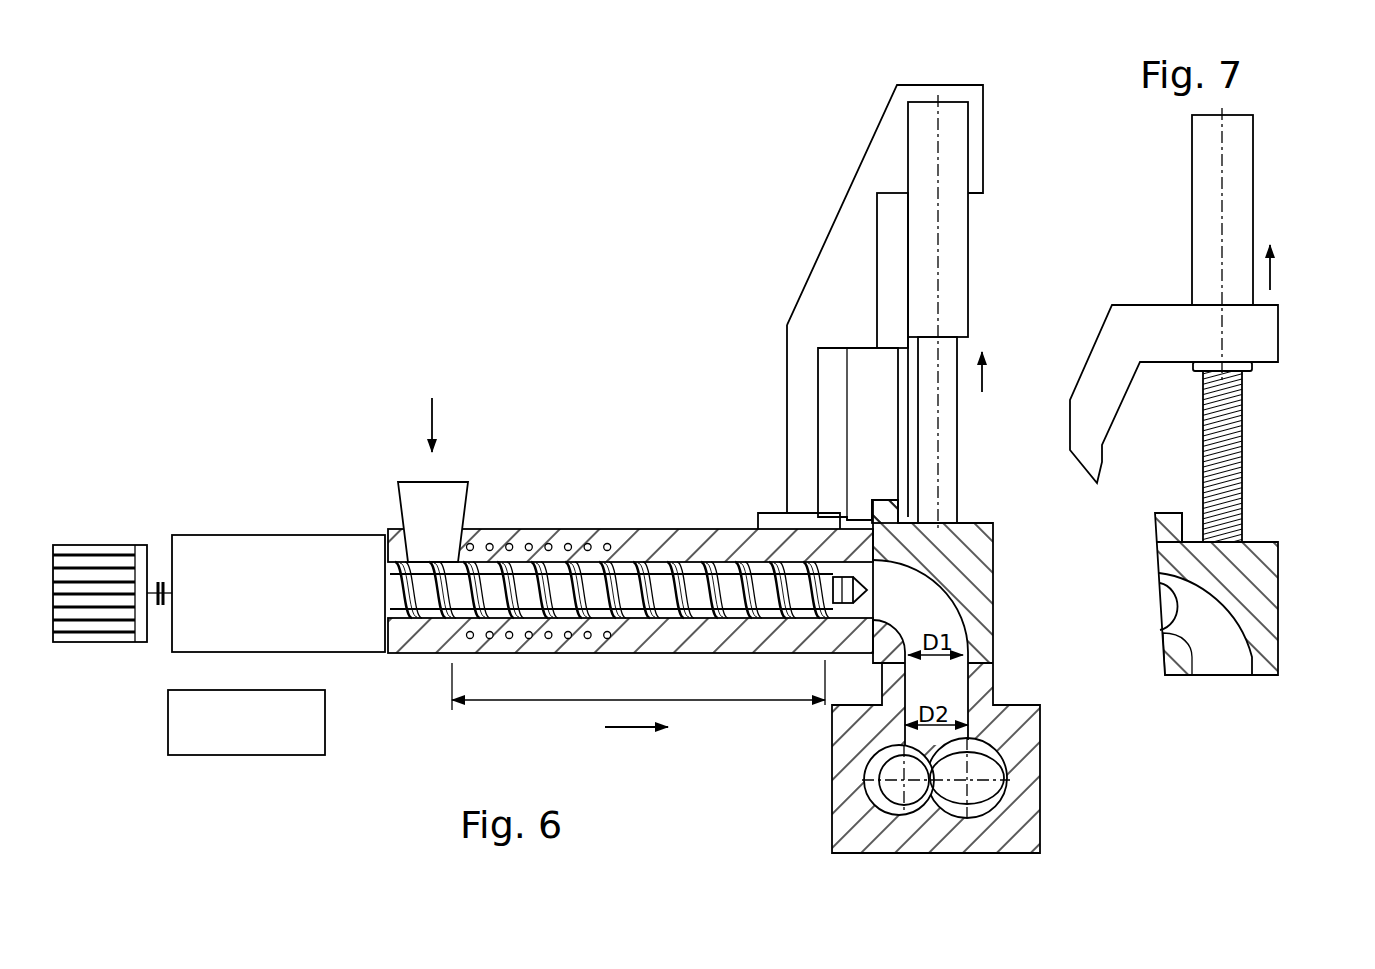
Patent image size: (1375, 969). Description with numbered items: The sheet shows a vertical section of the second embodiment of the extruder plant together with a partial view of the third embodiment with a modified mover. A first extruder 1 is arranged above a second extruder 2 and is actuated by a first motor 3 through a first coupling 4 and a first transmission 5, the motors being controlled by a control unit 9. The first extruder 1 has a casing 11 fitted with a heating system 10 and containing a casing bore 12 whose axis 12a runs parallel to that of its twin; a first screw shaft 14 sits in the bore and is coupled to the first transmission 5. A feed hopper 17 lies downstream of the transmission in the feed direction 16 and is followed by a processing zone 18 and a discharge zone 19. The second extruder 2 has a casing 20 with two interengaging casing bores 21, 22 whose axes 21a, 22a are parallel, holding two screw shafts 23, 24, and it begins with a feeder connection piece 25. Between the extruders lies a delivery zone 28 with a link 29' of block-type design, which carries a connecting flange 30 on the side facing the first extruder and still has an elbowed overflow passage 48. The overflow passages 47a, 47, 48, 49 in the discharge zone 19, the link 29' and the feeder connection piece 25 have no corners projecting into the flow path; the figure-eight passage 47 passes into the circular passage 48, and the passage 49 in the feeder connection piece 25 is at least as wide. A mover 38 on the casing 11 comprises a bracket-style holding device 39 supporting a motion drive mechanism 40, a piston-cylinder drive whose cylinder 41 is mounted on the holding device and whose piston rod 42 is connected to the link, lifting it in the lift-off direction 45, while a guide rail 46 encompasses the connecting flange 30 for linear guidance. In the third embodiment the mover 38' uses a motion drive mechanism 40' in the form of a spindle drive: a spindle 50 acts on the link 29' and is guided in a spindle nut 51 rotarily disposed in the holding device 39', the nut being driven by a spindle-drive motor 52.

In FIG. 6, the first extruder 1 is at (536, 527).
In FIG. 6, the second extruder 2 is at (1047, 722).
In FIG. 6, the first motor 3 is at (93, 641).
In FIG. 6, the first coupling 4 is at (158, 606).
In FIG. 6, the first transmission 5 is at (350, 640).
In FIG. 6, the control unit 9 is at (327, 720).
In FIG. 6, the heating system 10 is at (490, 544).
In FIG. 6, the casing 11 is at (416, 651).
In FIG. 6, the first casing bore 12 is at (650, 565).
In FIG. 6, the axis 12a is at (602, 588).
In FIG. 6, the first screw shaft 14 is at (692, 583).
In FIG. 6, the feed direction 16 is at (628, 732).
In FIG. 6, the feed hopper 17 is at (407, 503).
In FIG. 6, the processing zone 18 is at (638, 685).
In FIG. 6, the discharge zone 19 is at (785, 548).
In FIG. 6, the casing 20 is at (1017, 833).
In FIG. 6, the casing bore 21 is at (868, 786).
In FIG. 6, the axis 21a is at (862, 820).
In FIG. 6, the casing bore 22 is at (985, 812).
In FIG. 6, the axis 22a is at (990, 740).
In FIG. 6, the screw shaft 23 is at (876, 755).
In FIG. 6, the screw shaft 24 is at (1005, 781).
In FIG. 6, the feeder connection piece 25 is at (978, 688).
In FIG. 6, the delivery zone 28 is at (1005, 587).
In FIG. 7, the delivery zone 28 is at (1263, 512).
In FIG. 6, the link 29' is at (977, 602).
In FIG. 7, the link 29' is at (1253, 580).
In FIG. 6, the connecting flange 30 is at (893, 522).
In FIG. 7, the connecting flange 30 is at (1170, 523).
In FIG. 6, the mover 38 is at (771, 189).
In FIG. 6, the holding device 39 is at (839, 307).
In FIG. 6, the motion drive mechanism 40 is at (988, 309).
In FIG. 6, the cylinder 41 is at (965, 312).
In FIG. 6, the piston rod 42 is at (945, 443).
In FIG. 6, the lift-off direction 45 is at (984, 370).
In FIG. 7, the lift-off direction 45 is at (1273, 266).
In FIG. 6, the guide rail 46 is at (860, 425).
In FIG. 6, the overflow passage 47 is at (890, 588).
In FIG. 7, the overflow passage 47 is at (1172, 607).
In FIG. 6, the overflow passage 47a is at (875, 565).
In FIG. 6, the overflow passage 48 is at (925, 604).
In FIG. 7, the overflow passage 48 is at (1218, 637).
In FIG. 6, the overflow passage 49 is at (902, 740).
In FIG. 7, the mover 38' is at (1132, 170).
In FIG. 7, the holding device 39' is at (1174, 360).
In FIG. 7, the motion drive mechanism 40' is at (1308, 216).
In FIG. 7, the spindle 50 is at (1233, 413).
In FIG. 7, the spindle nut 51 is at (1245, 372).
In FIG. 7, the spindle-drive motor 52 is at (1257, 197).